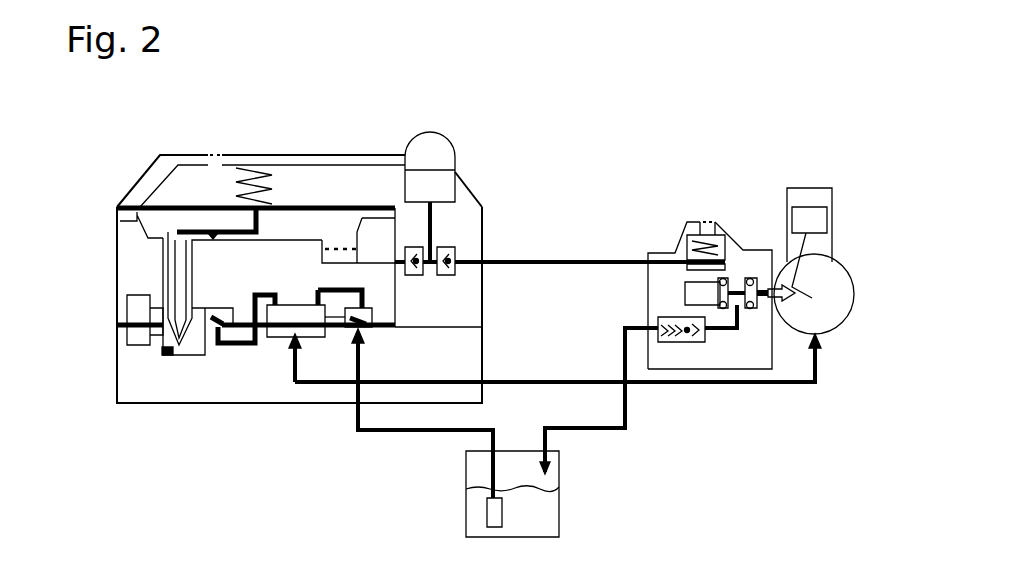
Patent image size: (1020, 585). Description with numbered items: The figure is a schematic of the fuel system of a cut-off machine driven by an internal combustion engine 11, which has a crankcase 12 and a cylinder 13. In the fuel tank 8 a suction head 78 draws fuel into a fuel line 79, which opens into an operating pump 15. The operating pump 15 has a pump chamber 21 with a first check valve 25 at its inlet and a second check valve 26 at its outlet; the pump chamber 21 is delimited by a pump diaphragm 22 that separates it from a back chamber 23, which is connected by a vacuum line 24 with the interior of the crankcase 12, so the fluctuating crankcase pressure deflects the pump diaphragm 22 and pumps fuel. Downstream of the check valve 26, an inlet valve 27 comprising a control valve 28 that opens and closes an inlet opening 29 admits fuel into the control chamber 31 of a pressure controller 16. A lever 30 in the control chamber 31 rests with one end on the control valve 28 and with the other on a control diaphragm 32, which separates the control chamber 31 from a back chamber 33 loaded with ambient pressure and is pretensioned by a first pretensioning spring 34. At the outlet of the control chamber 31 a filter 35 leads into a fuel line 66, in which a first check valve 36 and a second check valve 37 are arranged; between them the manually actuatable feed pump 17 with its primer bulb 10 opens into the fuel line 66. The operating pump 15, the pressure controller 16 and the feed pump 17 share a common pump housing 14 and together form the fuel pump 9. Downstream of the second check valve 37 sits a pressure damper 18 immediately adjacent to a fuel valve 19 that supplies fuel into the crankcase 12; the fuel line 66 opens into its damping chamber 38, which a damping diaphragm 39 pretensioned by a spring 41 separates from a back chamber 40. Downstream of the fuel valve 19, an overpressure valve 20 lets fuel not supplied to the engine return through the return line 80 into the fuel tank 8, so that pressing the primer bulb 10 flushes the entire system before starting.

The fuel tank 8 is at (560, 502).
The fuel pump 9 is at (150, 158).
The primer bulb 10 is at (445, 136).
The internal combustion engine 11 is at (810, 182).
The crankcase 12 is at (825, 316).
The cylinder 13 is at (830, 205).
The pump housing 14 is at (143, 393).
The operating pump 15 is at (262, 354).
The pressure controller 16 is at (328, 182).
The feed pump 17 is at (467, 162).
The pressure damper 18 is at (682, 236).
The fuel valve 19 is at (752, 278).
The overpressure valve 20 is at (675, 344).
The pump chamber 21 is at (295, 308).
The pump diaphragm 22 is at (282, 340).
The back chamber 23 is at (273, 340).
The vacuum line 24 is at (648, 312).
The first check valve 25 is at (353, 319).
The second check valve 26 is at (209, 343).
The inlet valve 27 is at (162, 355).
The control valve 28 is at (163, 311).
The inlet opening 29 is at (172, 356).
The lever 30 is at (180, 242).
The control chamber 31 is at (147, 229).
The control diaphragm 32 is at (160, 207).
The back chamber 33 is at (302, 173).
The first pretensioning spring 34 is at (253, 180).
The filter 35 is at (340, 247).
The first check valve 36 is at (414, 251).
The second check valve 37 is at (456, 270).
The damping chamber 38 is at (687, 266).
The damping diaphragm 39 is at (684, 255).
The back chamber 40 is at (688, 236).
The spring 41 is at (712, 236).
The fuel line 66 is at (551, 258).
The suction head 78 is at (489, 513).
The fuel line 79 is at (390, 433).
The return line 80 is at (623, 403).